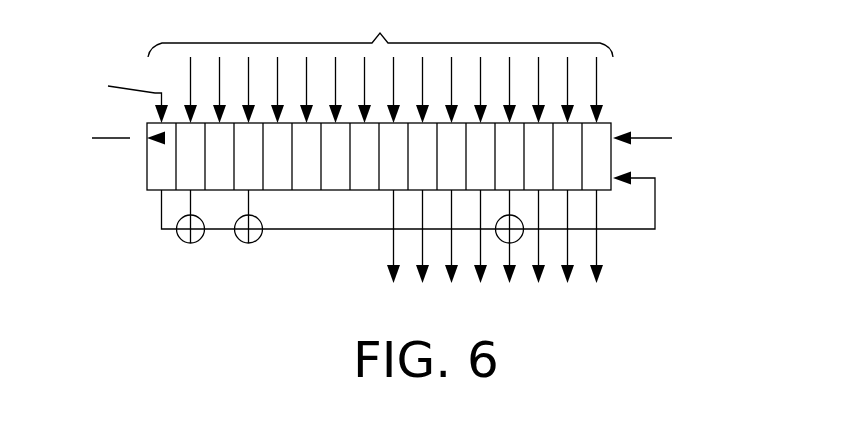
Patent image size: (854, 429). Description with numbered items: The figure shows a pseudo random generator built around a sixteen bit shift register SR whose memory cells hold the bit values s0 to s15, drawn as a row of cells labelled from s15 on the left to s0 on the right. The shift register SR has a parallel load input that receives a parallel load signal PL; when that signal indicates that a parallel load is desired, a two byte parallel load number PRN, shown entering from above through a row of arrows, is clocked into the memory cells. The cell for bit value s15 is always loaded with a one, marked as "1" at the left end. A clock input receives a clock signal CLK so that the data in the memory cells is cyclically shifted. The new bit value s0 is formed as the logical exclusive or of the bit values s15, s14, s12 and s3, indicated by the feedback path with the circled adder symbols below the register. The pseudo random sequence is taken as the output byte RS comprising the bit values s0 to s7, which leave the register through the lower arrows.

The shift register SR is at (614, 127).
The parallel load number PRN is at (380, 64).
The one 1 is at (120, 94).
The parallel load signal PL is at (109, 139).
The clock signal CLK is at (667, 139).
The output byte RS is at (495, 251).